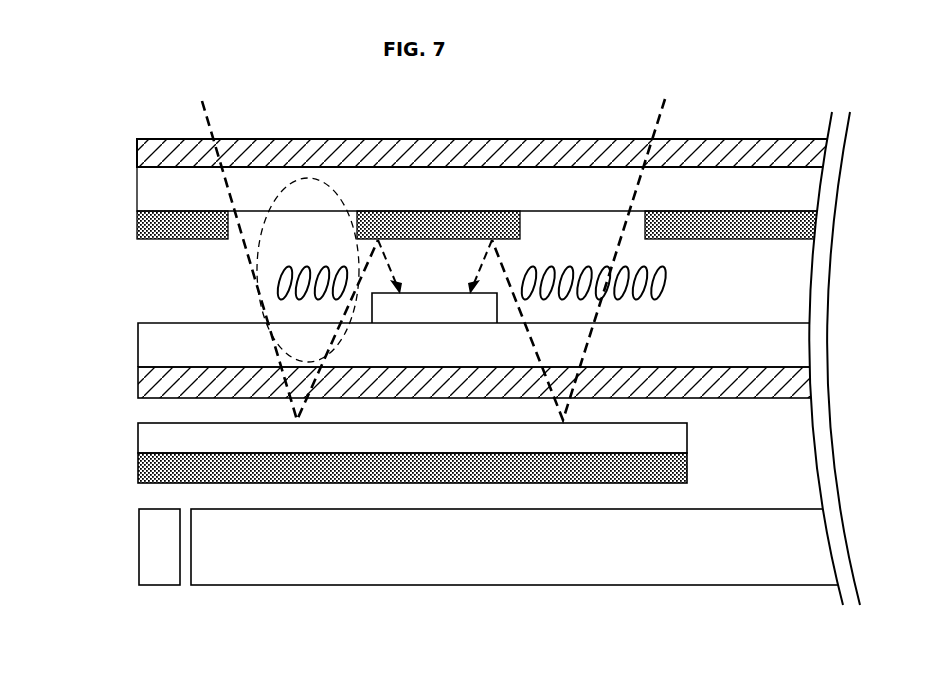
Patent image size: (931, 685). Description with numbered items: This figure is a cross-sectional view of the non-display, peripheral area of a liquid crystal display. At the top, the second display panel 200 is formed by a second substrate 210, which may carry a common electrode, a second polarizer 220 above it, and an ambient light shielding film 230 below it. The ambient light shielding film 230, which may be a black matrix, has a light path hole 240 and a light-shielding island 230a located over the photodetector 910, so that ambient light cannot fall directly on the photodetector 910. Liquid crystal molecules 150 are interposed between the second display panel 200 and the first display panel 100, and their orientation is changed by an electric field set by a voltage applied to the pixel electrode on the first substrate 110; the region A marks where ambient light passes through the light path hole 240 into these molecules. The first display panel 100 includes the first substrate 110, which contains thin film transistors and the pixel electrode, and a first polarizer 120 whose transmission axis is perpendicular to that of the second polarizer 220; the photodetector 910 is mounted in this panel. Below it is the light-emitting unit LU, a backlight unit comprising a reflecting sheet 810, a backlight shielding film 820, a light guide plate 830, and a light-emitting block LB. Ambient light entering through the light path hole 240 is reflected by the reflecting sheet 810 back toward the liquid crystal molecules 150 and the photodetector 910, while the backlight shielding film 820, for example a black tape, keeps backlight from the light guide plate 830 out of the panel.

The second display panel 200 is at (60, 155).
The second polarizer 220 is at (150, 154).
The second substrate 210 is at (150, 189).
The ambient light shielding film 230 is at (150, 227).
The light-shielding island 230a is at (520, 226).
The light path hole 240 is at (320, 231).
The region A is at (328, 183).
The liquid crystal molecules 150 is at (278, 290).
The photodetector 910 is at (436, 310).
The first display panel 100 is at (60, 340).
The first substrate 110 is at (150, 345).
The first polarizer 120 is at (150, 384).
The light-emitting unit LU is at (60, 425).
The reflecting sheet 810 is at (150, 440).
The backlight shielding film 820 is at (150, 469).
The light guide plate 830 is at (216, 518).
The light-emitting block LB is at (152, 551).